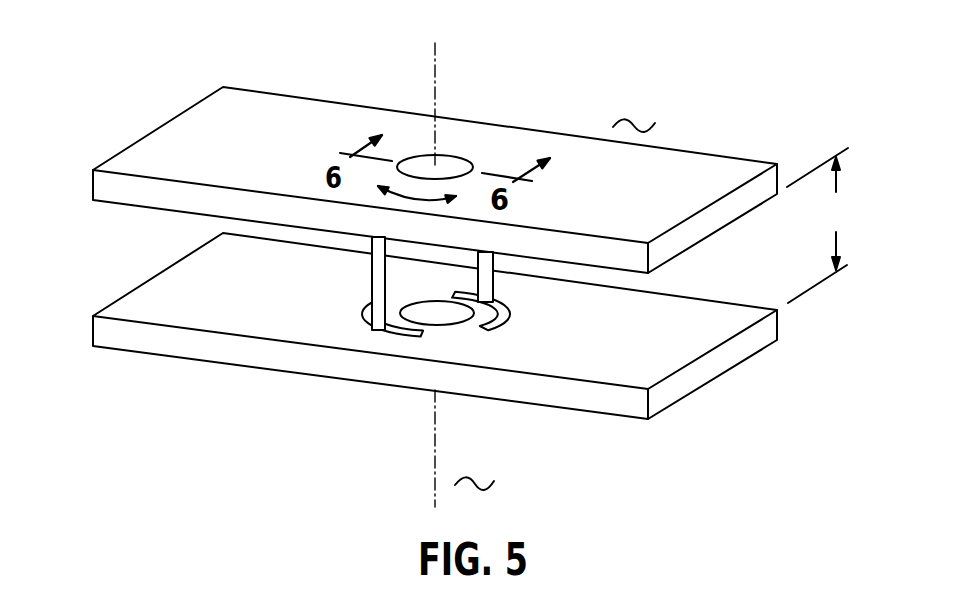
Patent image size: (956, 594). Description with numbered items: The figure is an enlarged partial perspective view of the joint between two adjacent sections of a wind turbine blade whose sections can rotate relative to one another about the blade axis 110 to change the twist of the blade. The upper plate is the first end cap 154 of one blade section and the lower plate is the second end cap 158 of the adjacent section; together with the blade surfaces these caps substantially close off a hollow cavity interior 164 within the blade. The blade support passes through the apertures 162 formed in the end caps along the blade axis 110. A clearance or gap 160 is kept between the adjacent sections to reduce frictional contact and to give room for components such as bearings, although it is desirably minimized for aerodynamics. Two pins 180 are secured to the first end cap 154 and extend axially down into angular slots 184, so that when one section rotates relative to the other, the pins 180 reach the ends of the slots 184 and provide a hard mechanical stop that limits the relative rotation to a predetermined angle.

The blade axis 110 is at (435, 63).
The first end cap 154 is at (713, 176).
The second end cap 158 is at (633, 372).
The gap 160 is at (821, 225).
The apertures 162 is at (465, 158).
The hollow cavity interior 164 is at (555, 289).
The pins 180 is at (372, 272).
The angular slots 184 is at (395, 338).